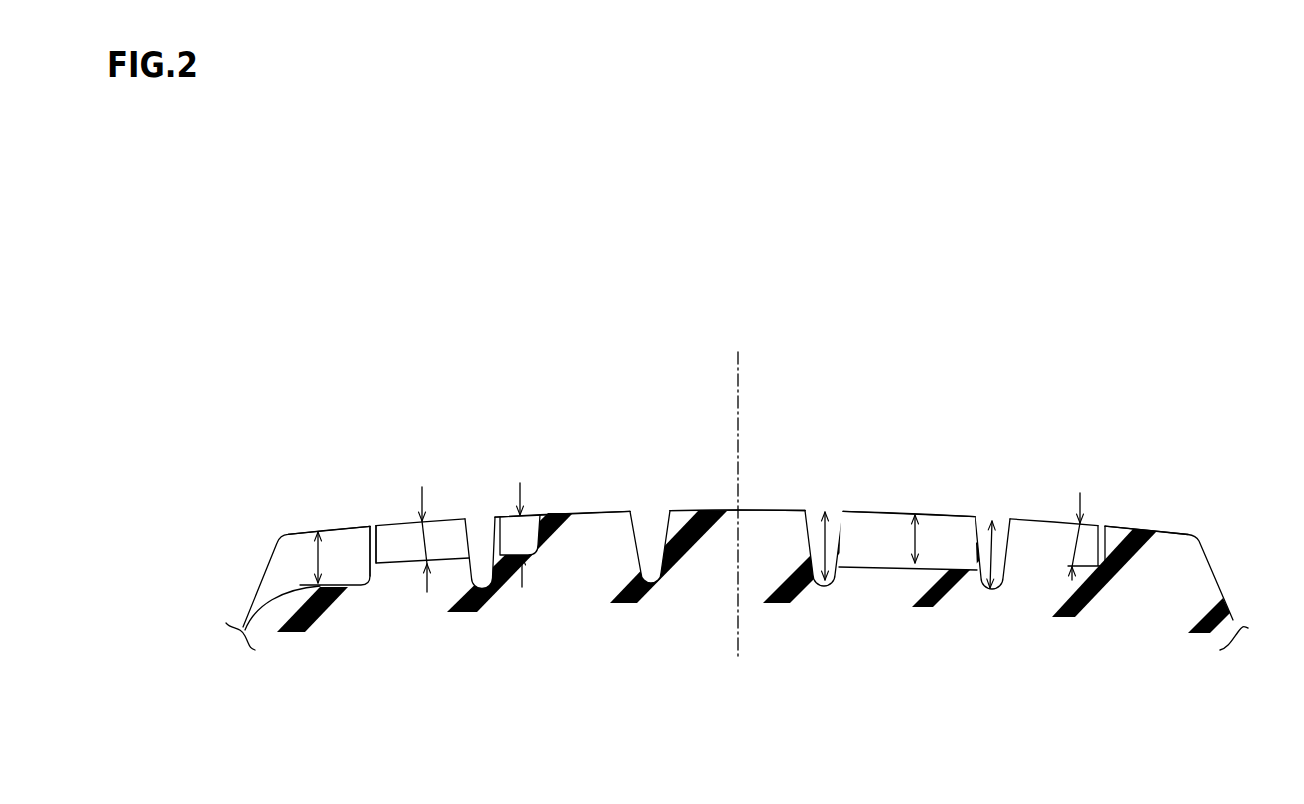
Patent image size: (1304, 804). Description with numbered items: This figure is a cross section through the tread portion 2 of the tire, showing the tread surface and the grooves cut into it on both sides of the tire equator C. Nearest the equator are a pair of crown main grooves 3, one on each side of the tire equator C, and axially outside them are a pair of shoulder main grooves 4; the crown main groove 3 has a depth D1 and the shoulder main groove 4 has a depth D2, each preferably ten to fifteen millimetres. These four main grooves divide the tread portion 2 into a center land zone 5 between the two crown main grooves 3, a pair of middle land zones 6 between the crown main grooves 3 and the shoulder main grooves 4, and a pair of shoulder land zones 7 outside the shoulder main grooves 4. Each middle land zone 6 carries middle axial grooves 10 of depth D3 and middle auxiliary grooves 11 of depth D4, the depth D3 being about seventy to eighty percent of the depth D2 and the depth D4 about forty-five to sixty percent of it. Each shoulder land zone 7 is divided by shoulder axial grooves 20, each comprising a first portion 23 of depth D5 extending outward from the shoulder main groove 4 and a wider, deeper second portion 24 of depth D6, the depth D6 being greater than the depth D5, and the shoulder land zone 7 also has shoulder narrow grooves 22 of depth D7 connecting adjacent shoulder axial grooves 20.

The tread portion 2 is at (1186, 499).
The crown main groove 3 is at (650, 535).
The shoulder main groove 4 is at (480, 535).
The center land zone 5 is at (749, 508).
The middle land zone 6 is at (592, 510).
The shoulder land zone 7 is at (321, 527).
The middle axial groove 10 is at (896, 540).
The middle auxiliary groove 11 is at (508, 530).
The shoulder axial groove 20 is at (384, 455).
The shoulder narrow groove 22 is at (372, 526).
The first portion 23 is at (405, 530).
The second portion 24 is at (355, 540).
The tire equator C is at (737, 490).
The depth of the crown main groove D1 is at (827, 550).
The depth of the shoulder main groove D2 is at (990, 545).
The depth of the middle axial groove D3 is at (917, 538).
The depth of the middle auxiliary groove D4 is at (537, 516).
The groove depth of the first portion D5 is at (427, 540).
The groove depth of the second portion D6 is at (320, 558).
The depth of the shoulder narrow groove D7 is at (1076, 545).